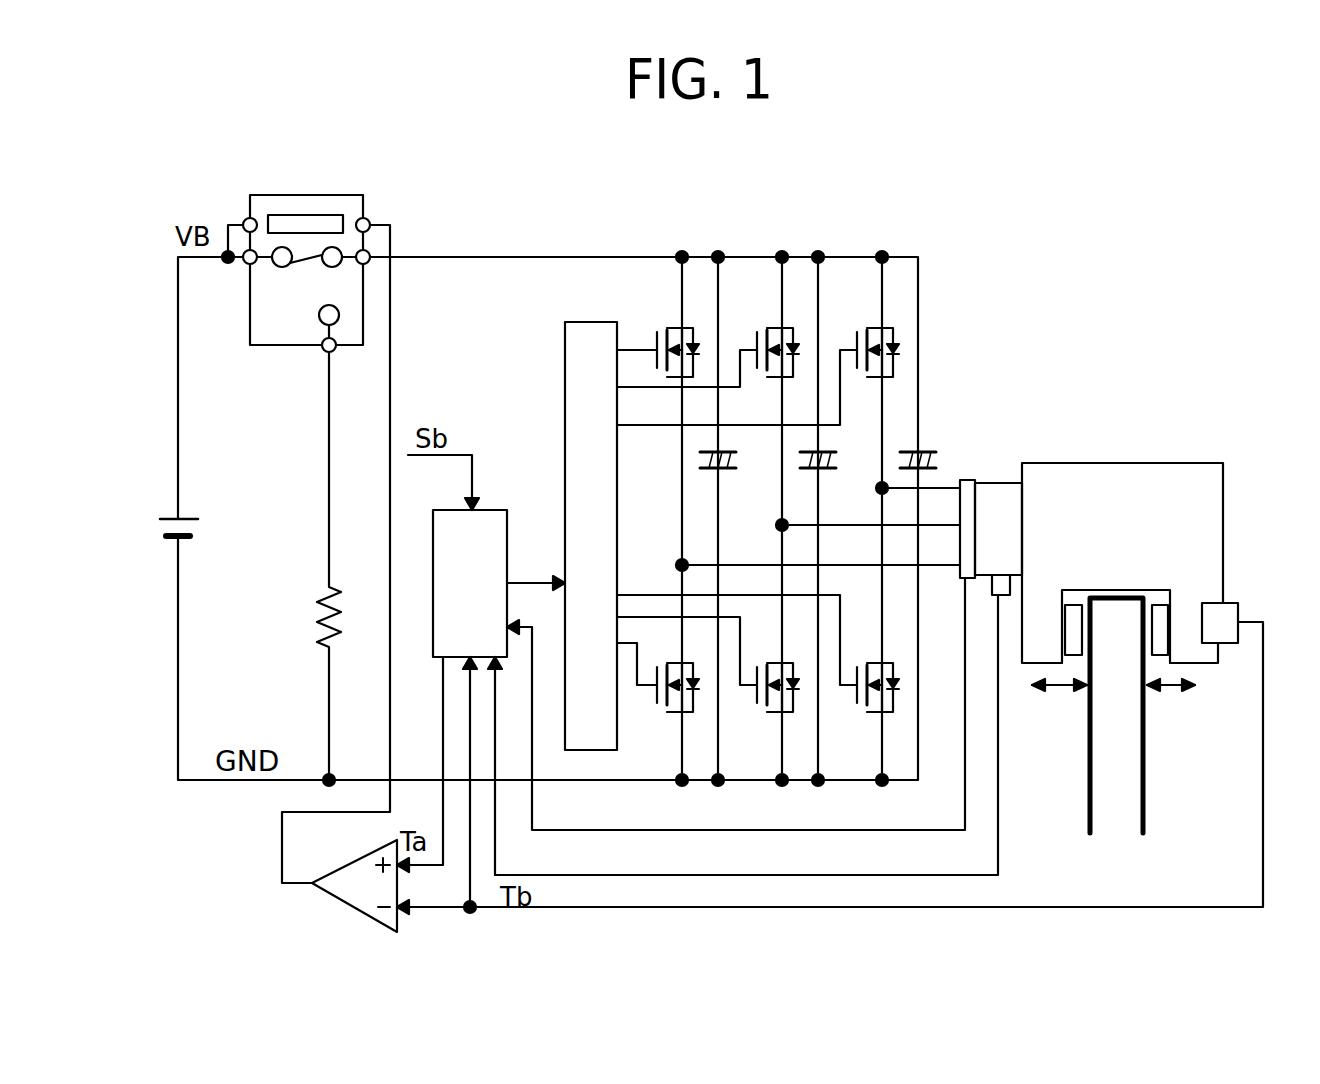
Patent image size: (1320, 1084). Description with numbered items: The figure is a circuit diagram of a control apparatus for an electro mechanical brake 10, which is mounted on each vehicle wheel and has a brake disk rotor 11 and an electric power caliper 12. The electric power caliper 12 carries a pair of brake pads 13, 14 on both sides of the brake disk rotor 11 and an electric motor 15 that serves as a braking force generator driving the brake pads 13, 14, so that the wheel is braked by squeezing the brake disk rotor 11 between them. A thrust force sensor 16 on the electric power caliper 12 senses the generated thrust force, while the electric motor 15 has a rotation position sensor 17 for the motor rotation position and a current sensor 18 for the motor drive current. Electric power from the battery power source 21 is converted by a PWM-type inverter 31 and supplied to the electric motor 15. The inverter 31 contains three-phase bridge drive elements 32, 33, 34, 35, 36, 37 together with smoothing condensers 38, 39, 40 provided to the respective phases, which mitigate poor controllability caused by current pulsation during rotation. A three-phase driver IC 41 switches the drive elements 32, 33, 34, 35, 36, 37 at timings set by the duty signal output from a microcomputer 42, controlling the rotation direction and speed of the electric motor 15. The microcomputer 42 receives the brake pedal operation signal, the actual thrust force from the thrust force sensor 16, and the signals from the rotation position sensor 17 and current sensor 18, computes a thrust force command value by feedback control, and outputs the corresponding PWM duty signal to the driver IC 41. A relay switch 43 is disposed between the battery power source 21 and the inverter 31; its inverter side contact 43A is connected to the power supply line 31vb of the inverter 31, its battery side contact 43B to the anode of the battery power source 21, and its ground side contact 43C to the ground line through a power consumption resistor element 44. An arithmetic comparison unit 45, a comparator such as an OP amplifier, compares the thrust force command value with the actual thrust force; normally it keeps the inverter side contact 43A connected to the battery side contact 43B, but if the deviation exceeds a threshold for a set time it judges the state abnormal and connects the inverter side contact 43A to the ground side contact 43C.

The electro mechanical brake 10 is at (1151, 599).
The brake disk rotor 11 is at (1088, 797).
The electric power caliper 12 is at (1228, 463).
The brake pad 13 is at (1068, 660).
The brake pad 14 is at (1158, 660).
The electric motor 15 is at (1000, 482).
The thrust force sensor 16 is at (1232, 603).
The rotation position sensor 17 is at (993, 592).
The current sensor 18 is at (963, 480).
The battery power source 21 is at (166, 518).
The inverter 31 is at (757, 480).
The power supply line 31vb is at (505, 255).
The three-phase bridge drive element 32 is at (662, 332).
The three-phase bridge drive element 33 is at (762, 332).
The three-phase bridge drive element 34 is at (862, 332).
The three-phase bridge drive element 35 is at (663, 703).
The three-phase bridge drive element 36 is at (763, 703).
The three-phase bridge drive element 37 is at (863, 703).
The smoothing condenser 38 is at (722, 470).
The smoothing condenser 39 is at (822, 470).
The smoothing condenser 40 is at (922, 455).
The three-phase driver IC 41 is at (598, 322).
The microcomputer 42 is at (495, 510).
The relay switch 43 is at (333, 261).
The inverter side contact 43A is at (340, 262).
The battery side contact 43B is at (275, 264).
The ground side contact 43C is at (313, 333).
The power consumption resistor element 44 is at (318, 595).
The arithmetic comparison unit 45 is at (330, 900).